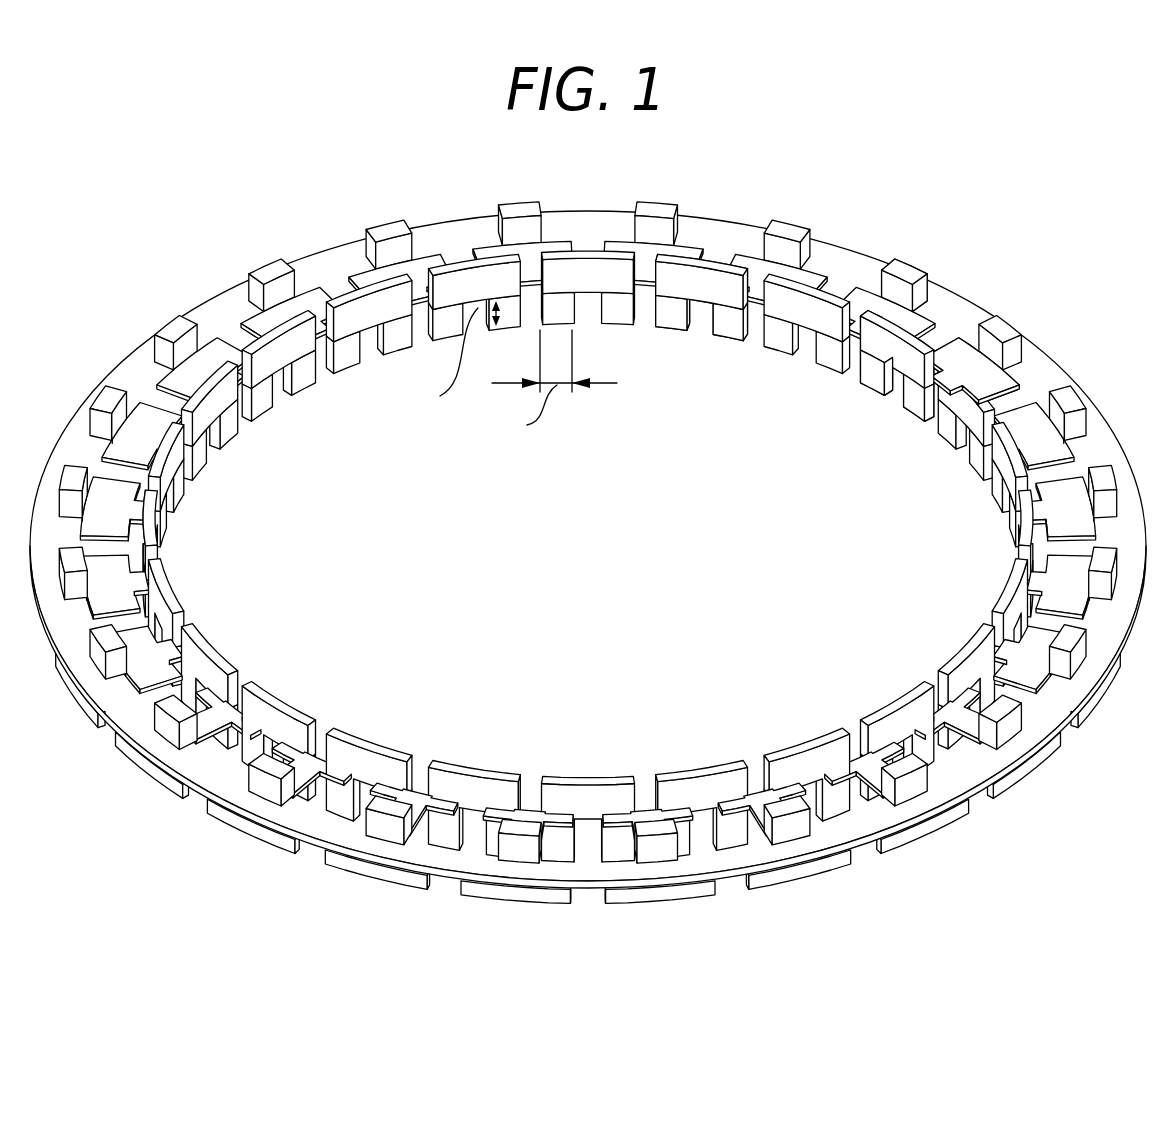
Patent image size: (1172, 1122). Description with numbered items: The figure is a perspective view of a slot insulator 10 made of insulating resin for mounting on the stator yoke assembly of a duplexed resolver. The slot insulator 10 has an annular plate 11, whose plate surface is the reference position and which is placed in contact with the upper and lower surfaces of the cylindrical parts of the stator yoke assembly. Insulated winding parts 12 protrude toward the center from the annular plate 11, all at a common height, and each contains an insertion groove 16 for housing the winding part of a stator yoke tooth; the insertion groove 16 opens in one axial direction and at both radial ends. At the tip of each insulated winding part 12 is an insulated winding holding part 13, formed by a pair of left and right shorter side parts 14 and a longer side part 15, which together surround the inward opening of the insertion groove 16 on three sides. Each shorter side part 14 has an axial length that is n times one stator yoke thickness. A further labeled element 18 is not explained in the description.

The slot insulator 10 is at (238, 238).
The annular plate 11 is at (1045, 370).
The insulated winding part 12 is at (918, 330).
The insulated winding holding part 13 is at (764, 390).
The shorter side part 14 is at (881, 383).
The longer side part 15 is at (895, 396).
The insertion groove 16 is at (705, 316).
The outer projection 18 is at (903, 262).